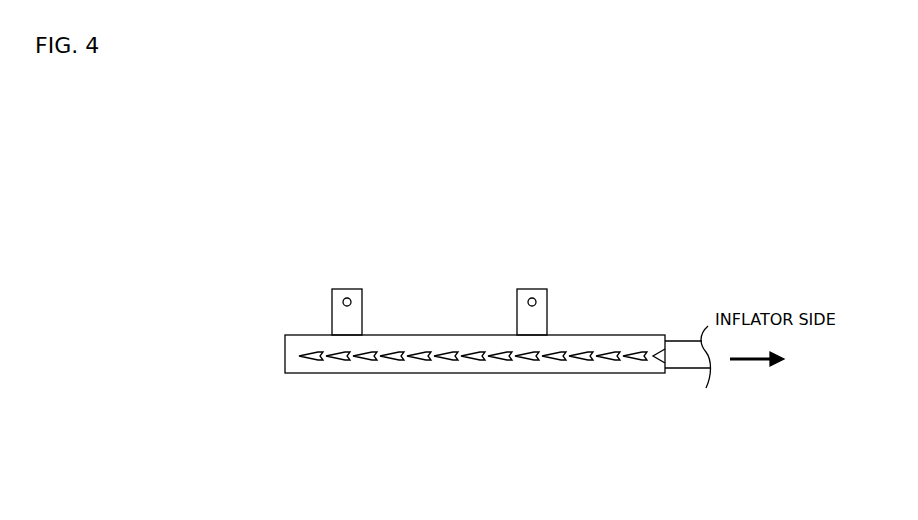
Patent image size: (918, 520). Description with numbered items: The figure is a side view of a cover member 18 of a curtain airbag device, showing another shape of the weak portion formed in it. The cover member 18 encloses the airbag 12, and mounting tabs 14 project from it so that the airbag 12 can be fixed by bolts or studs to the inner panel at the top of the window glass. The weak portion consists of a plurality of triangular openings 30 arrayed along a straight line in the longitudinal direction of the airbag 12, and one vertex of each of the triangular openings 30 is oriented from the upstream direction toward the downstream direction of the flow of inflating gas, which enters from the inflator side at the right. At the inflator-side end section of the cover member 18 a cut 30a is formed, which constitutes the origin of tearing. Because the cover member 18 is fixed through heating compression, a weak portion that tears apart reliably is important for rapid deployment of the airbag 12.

The airbag 12 is at (678, 340).
The mounting tabs 14 is at (535, 290).
The cover member 18 is at (419, 373).
The triangular openings 30 is at (584, 362).
The cut 30a is at (666, 357).